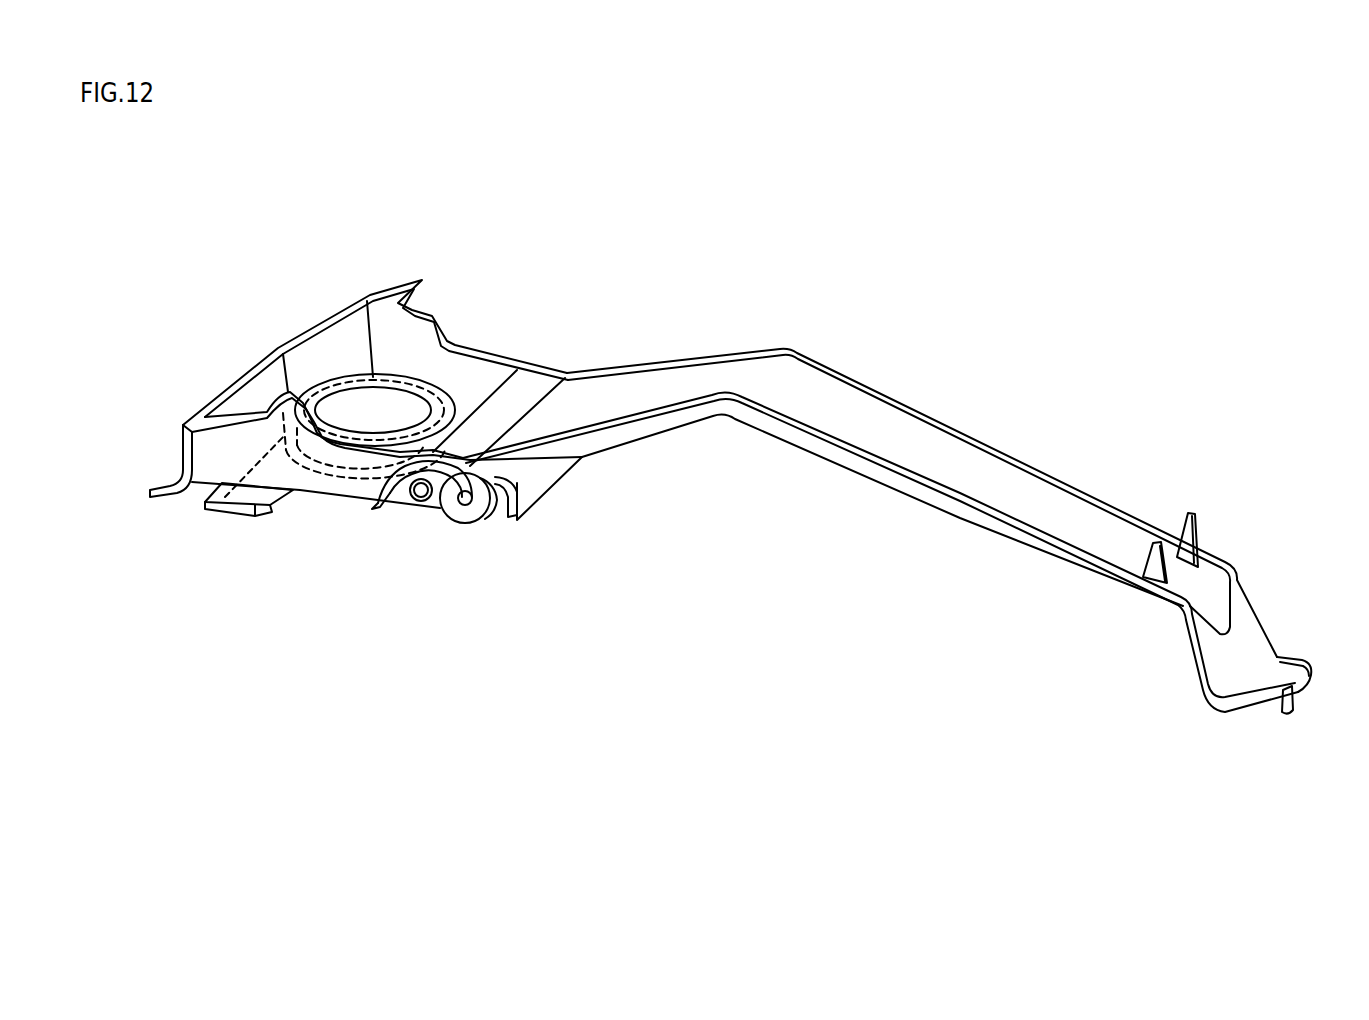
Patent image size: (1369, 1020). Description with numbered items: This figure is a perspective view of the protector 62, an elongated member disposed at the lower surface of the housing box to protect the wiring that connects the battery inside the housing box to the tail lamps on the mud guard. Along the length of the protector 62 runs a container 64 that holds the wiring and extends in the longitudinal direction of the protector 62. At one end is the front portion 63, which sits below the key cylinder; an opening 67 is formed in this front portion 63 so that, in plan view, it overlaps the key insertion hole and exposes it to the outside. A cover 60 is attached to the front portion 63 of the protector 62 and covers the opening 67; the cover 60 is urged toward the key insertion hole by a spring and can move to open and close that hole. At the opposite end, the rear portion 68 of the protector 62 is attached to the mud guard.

The cover 60 is at (290, 500).
The protector 62 is at (883, 390).
The front portion 63 is at (477, 346).
The container 64 is at (937, 478).
The opening 67 is at (350, 412).
The rear portion 68 is at (1267, 675).